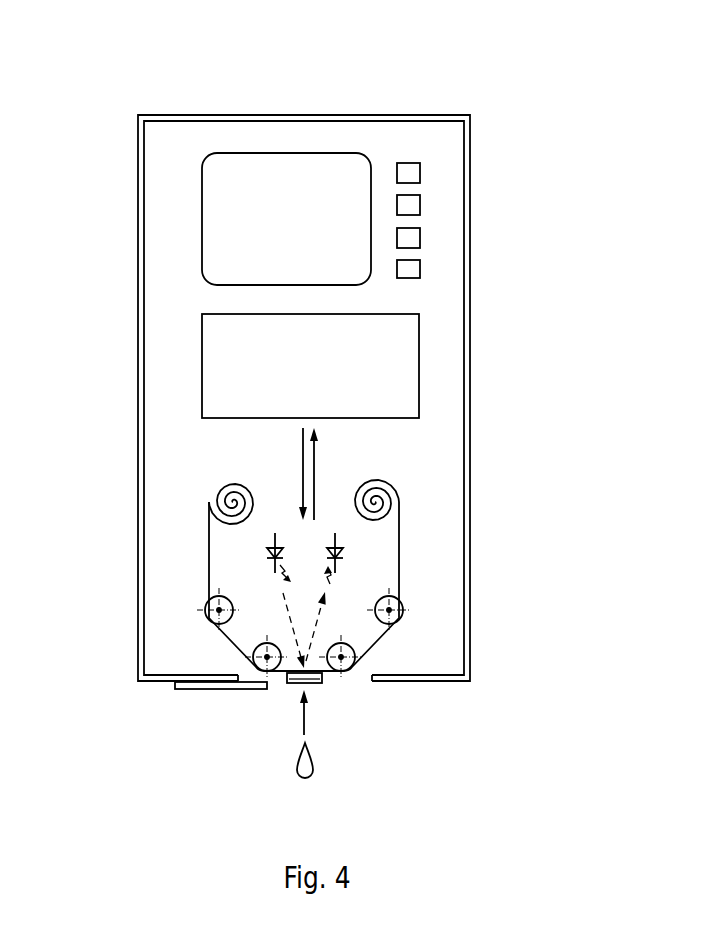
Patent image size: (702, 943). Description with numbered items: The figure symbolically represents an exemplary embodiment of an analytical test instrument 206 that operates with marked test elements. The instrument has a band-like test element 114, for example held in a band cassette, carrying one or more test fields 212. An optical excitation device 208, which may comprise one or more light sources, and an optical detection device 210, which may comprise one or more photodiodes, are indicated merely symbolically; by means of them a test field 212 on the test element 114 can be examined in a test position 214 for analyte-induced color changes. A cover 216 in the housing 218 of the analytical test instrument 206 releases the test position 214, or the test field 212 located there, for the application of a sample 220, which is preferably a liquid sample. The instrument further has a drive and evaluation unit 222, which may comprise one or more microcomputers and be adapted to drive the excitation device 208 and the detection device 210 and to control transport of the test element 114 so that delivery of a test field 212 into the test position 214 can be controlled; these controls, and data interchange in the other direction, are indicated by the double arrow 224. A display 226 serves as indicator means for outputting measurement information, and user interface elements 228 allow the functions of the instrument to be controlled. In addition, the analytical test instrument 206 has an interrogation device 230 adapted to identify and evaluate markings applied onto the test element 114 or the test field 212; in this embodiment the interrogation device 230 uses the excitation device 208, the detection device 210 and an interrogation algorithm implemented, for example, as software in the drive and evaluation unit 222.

The analytical test instrument 206 is at (533, 132).
The housing 218 is at (470, 278).
The display 226 is at (301, 232).
The user interface elements 228 is at (408, 203).
The drive and evaluation unit 222 is at (260, 375).
The interrogation device 230 is at (304, 600).
The double arrow 224 is at (314, 473).
The test element 114 is at (203, 512).
The optical excitation device 208 is at (268, 553).
The optical detection device 210 is at (340, 553).
The test field 212 is at (320, 685).
The cover 216 is at (210, 687).
The test position 214 is at (285, 696).
The sample 220 is at (308, 767).